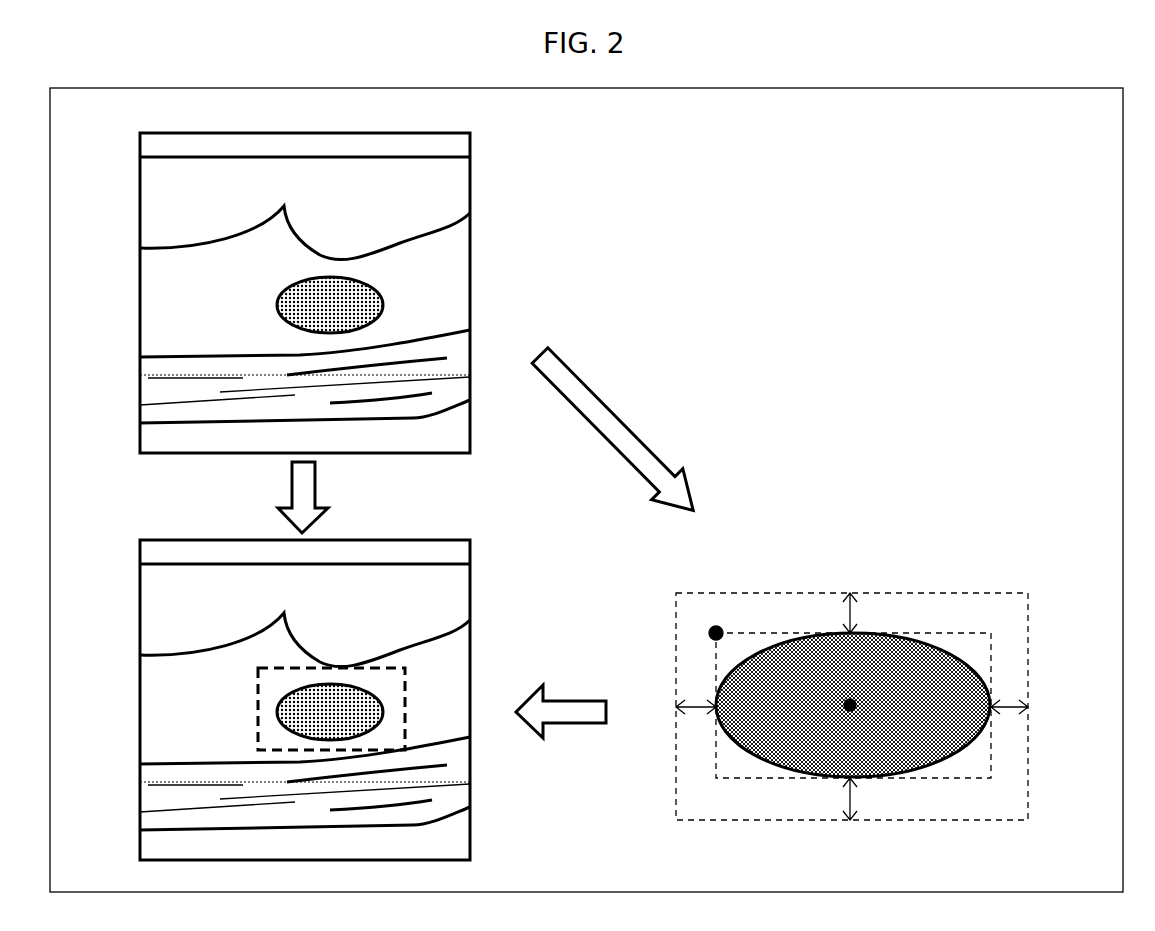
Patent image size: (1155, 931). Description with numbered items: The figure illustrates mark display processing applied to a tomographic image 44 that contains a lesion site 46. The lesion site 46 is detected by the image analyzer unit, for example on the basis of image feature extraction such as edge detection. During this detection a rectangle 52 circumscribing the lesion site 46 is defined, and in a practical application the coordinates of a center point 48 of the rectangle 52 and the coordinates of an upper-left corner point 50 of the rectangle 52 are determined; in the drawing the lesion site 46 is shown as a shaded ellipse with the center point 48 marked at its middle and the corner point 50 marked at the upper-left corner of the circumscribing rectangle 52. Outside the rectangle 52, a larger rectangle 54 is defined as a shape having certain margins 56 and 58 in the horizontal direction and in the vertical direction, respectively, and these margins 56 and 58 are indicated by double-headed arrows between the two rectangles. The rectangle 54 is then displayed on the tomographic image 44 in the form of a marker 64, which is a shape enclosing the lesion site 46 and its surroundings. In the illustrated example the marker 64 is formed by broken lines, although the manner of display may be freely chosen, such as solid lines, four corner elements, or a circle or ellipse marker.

The tomographic image 44 is at (310, 133).
The lesion site 46 is at (372, 287).
The center point 48 is at (850, 700).
The upper-left corner point 50 is at (716, 626).
The rectangle 52 is at (950, 630).
The rectangle 54 is at (1028, 650).
The margin 56 is at (700, 723).
The margin 58 is at (858, 612).
The marker 64 is at (405, 725).